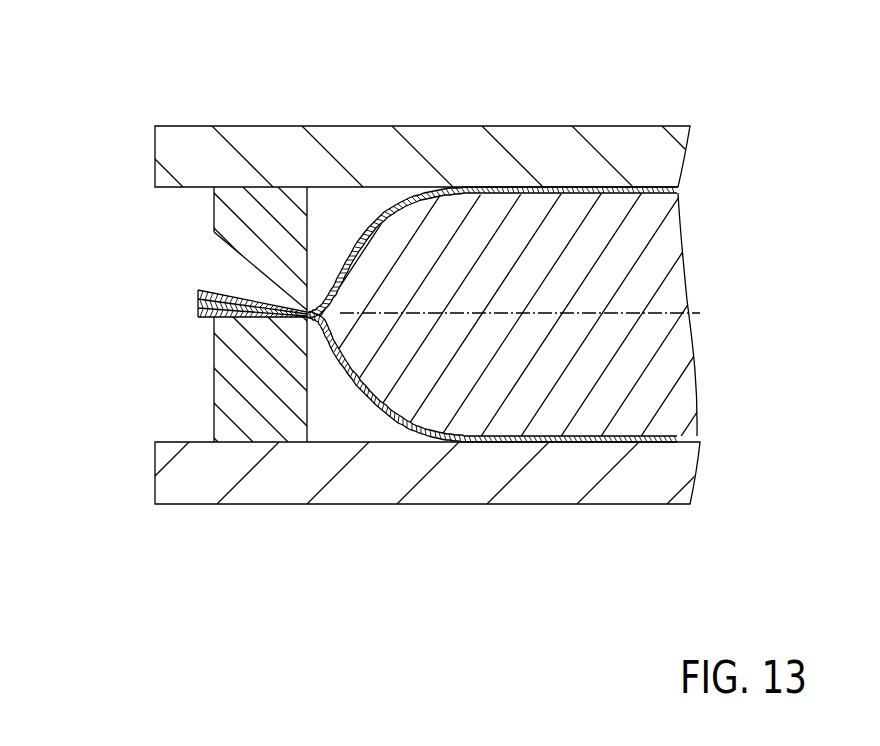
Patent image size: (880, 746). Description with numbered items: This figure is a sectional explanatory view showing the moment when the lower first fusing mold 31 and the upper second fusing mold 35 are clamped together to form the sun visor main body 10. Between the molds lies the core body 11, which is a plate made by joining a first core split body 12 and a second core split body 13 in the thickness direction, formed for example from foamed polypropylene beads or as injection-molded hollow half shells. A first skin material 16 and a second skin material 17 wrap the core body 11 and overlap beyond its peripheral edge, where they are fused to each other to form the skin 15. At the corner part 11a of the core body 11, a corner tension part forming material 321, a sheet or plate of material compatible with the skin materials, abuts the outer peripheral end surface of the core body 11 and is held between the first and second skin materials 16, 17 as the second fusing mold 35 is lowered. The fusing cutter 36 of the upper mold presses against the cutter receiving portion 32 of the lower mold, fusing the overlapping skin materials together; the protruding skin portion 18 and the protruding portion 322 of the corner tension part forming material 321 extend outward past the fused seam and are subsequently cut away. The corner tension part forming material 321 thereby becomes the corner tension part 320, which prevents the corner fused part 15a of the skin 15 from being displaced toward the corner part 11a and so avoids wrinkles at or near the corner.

The sun visor main body 10 is at (630, 188).
The core body 11 is at (623, 565).
The corner part 11a is at (314, 309).
The first core split body 12 is at (640, 425).
The second core split body 13 is at (670, 280).
The skin 15 is at (480, 584).
The corner fused part 15a is at (339, 285).
The first skin material 16 is at (483, 443).
The second skin material 17 is at (572, 195).
The protruding skin portion 18 is at (200, 317).
The first fusing mold 31 is at (200, 482).
The cutter receiving portion 32 is at (233, 393).
The corner tension part 320 is at (309, 316).
The corner tension part forming material 321 is at (266, 373).
The protruding portion 322 is at (227, 323).
The second fusing mold 35 is at (383, 150).
The fusing cutter 36 is at (240, 252).